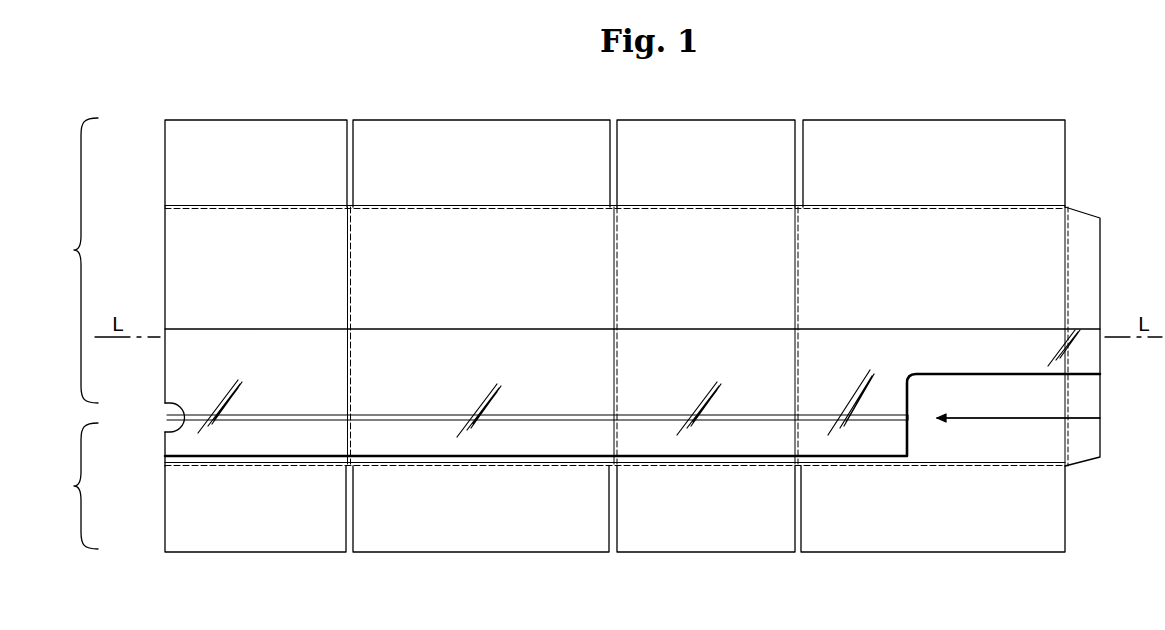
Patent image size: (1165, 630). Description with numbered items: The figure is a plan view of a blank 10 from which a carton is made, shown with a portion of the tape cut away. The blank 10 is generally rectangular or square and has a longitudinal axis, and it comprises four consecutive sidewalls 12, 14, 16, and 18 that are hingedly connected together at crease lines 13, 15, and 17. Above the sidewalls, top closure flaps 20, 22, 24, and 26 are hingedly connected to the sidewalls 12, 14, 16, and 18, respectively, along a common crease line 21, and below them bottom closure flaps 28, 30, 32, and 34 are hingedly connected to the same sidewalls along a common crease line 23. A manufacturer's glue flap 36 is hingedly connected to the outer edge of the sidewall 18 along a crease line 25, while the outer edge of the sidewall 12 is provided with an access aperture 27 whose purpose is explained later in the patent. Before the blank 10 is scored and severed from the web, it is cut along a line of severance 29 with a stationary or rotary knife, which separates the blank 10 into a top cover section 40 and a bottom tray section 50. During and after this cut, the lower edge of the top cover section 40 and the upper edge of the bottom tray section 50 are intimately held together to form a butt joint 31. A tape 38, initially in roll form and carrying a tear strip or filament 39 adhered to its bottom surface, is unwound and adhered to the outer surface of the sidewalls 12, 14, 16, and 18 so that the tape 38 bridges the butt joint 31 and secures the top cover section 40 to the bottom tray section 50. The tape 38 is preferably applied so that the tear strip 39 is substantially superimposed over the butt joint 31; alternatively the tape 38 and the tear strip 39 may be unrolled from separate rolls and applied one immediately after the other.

The blank 10 is at (928, 79).
The sidewall 12 is at (262, 280).
The crease line 13 is at (350, 366).
The sidewall 14 is at (496, 280).
The crease line 15 is at (617, 366).
The sidewall 16 is at (718, 280).
The crease line 17 is at (798, 366).
The sidewall 18 is at (942, 280).
The top closure flap 20 is at (264, 169).
The common crease line 21 is at (398, 205).
The top closure flap 22 is at (497, 169).
The common crease line 23 is at (396, 466).
The top closure flap 24 is at (719, 169).
The crease line 25 is at (1068, 244).
The top closure flap 26 is at (943, 169).
The access aperture 27 is at (170, 427).
The bottom closure flap 28 is at (262, 515).
The line of severance 29 is at (1043, 421).
The bottom closure flap 30 is at (492, 515).
The butt joint 31 is at (993, 420).
The bottom closure flap 32 is at (721, 515).
The bottom closure flap 34 is at (856, 515).
The manufacturer's glue flap 36 is at (1085, 281).
The tape 38 is at (908, 437).
The tear strip 39 is at (170, 410).
The top cover section 40 is at (74, 260).
The bottom tray section 50 is at (74, 486).